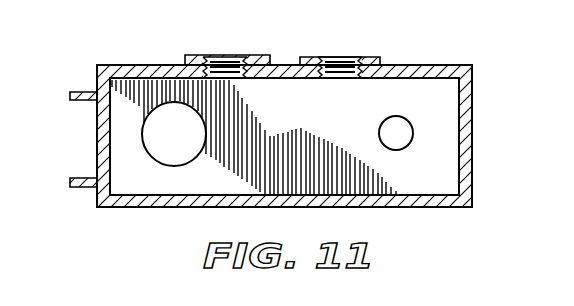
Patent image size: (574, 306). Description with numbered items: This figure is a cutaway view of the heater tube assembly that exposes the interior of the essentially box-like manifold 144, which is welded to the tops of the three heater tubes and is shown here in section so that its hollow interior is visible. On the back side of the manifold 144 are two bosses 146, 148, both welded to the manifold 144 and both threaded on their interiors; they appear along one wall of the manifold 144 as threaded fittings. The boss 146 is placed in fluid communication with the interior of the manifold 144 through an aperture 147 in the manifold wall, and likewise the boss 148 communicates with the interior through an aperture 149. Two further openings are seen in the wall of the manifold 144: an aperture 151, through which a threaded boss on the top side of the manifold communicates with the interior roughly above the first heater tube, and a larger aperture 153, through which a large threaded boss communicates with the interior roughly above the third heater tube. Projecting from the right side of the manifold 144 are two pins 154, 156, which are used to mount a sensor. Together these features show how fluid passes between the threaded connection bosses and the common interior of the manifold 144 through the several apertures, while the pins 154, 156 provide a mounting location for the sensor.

The manifold 144 is at (466, 141).
The boss 146 is at (378, 56).
The aperture 147 is at (336, 62).
The boss 148 is at (256, 55).
The aperture 149 is at (210, 56).
The aperture 151 is at (398, 147).
The aperture 153 is at (192, 154).
The pin 154 is at (76, 188).
The pin 156 is at (76, 101).